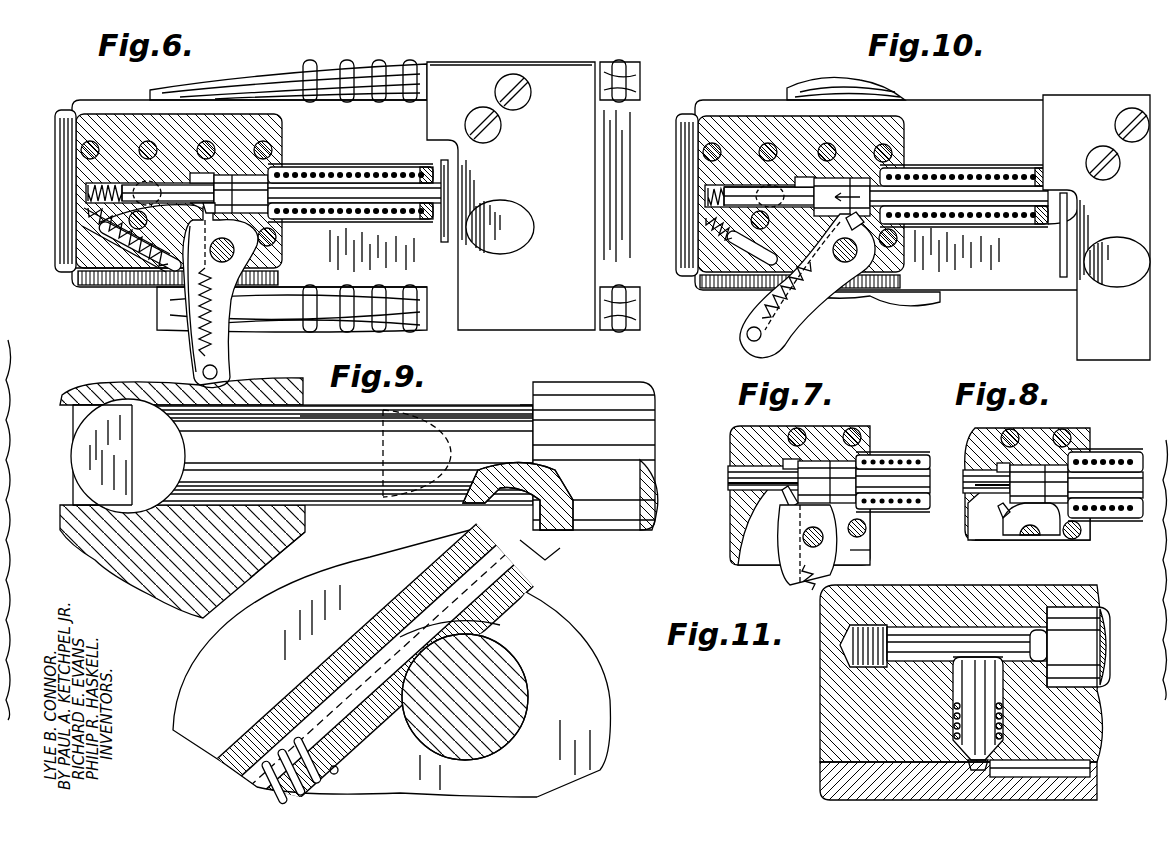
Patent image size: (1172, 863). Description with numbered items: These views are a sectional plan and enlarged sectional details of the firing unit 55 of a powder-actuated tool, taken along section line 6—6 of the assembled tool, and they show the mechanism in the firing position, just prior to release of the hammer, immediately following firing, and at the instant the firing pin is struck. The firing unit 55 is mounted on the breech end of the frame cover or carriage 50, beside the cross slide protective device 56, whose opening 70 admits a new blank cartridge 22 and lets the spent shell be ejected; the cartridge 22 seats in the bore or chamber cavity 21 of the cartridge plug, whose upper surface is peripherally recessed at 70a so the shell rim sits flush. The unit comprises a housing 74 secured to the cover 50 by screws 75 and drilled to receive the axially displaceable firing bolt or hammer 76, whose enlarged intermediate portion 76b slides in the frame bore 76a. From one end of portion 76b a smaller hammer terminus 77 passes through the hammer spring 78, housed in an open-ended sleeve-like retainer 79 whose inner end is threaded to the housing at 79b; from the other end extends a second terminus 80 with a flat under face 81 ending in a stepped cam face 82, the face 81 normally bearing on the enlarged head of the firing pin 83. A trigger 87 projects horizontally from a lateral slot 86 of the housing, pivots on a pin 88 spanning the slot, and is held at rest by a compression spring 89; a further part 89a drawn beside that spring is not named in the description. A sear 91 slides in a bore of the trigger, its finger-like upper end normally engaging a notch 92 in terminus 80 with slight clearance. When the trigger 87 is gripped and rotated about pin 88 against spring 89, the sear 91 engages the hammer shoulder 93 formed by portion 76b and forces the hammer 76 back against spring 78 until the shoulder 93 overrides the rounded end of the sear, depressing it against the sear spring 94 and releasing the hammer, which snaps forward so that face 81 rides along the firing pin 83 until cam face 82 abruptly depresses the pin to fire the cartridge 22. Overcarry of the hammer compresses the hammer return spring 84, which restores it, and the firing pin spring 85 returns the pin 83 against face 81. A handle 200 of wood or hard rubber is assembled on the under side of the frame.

In FIG. 6, the section line 6 is at (58, 124).
In FIG. 10, the section line 6 is at (684, 120).
In FIG. 11, the bore 21 is at (940, 770).
In FIG. 11, the blank cartridge 22 is at (1065, 770).
In FIG. 6, the cover 50 is at (150, 100).
In FIG. 10, the cover 50 is at (978, 108).
In FIG. 6, the firing unit 55 is at (95, 110).
In FIG. 10, the firing unit 55 is at (740, 110).
In FIG. 6, the cross slide protective device 56 is at (511, 196).
In FIG. 10, the cross slide protective device 56 is at (1082, 105).
In FIG. 6, the opening 70 is at (515, 210).
In FIG. 10, the opening 70 is at (1105, 285).
In FIG. 11, the peripheral recess 70a is at (968, 762).
In FIG. 6, the housing 74 is at (74, 266).
In FIG. 9, the housing 74 is at (225, 580).
In FIG. 7, the housing 74 is at (740, 500).
In FIG. 8, the housing 74 is at (968, 508).
In FIG. 11, the housing 74 is at (830, 680).
In FIG. 6, the screws 75 is at (80, 143).
In FIG. 10, the screws 75 is at (704, 140).
In FIG. 7, the screws 75 is at (790, 432).
In FIG. 8, the screws 75 is at (1002, 432).
In FIG. 6, the firing bolt or hammer 76 is at (312, 183).
In FIG. 10, the firing bolt or hammer 76 is at (959, 195).
In FIG. 9, the firing bolt or hammer 76 is at (304, 455).
In FIG. 7, the firing bolt or hammer 76 is at (893, 481).
In FIG. 8, the firing bolt or hammer 76 is at (1105, 485).
In FIG. 11, the firing bolt or hammer 76 is at (1078, 647).
In FIG. 6, the frame bore 76a is at (225, 175).
In FIG. 10, the frame bore 76a is at (835, 178).
In FIG. 7, the frame bore 76a is at (823, 461).
In FIG. 8, the frame bore 76a is at (1033, 465).
In FIG. 11, the frame bore 76a is at (1065, 607).
In FIG. 6, the intermediate portion 76b is at (238, 175).
In FIG. 10, the intermediate portion 76b is at (858, 178).
In FIG. 9, the intermediate portion 76b is at (570, 392).
In FIG. 7, the intermediate portion 76b is at (840, 461).
In FIG. 8, the intermediate portion 76b is at (1050, 465).
In FIG. 11, the intermediate portion 76b is at (1100, 615).
In FIG. 6, the hammer terminus 77 is at (358, 222).
In FIG. 10, the hammer terminus 77 is at (985, 224).
In FIG. 7, the hammer terminus 77 is at (902, 467).
In FIG. 8, the hammer terminus 77 is at (1108, 521).
In FIG. 6, the hammer spring 78 is at (340, 167).
In FIG. 10, the hammer spring 78 is at (915, 170).
In FIG. 7, the hammer spring 78 is at (905, 455).
In FIG. 8, the hammer spring 78 is at (1125, 452).
In FIG. 6, the retainer 79 is at (372, 167).
In FIG. 10, the retainer 79 is at (952, 170).
In FIG. 7, the threaded end 79b is at (875, 455).
In FIG. 8, the threaded end 79b is at (1100, 452).
In FIG. 6, the second hammer terminus 80 is at (167, 182).
In FIG. 10, the second hammer terminus 80 is at (730, 200).
In FIG. 9, the second hammer terminus 80 is at (460, 410).
In FIG. 7, the second hammer terminus 80 is at (745, 470).
In FIG. 8, the second hammer terminus 80 is at (970, 480).
In FIG. 11, the second hammer terminus 80 is at (935, 630).
In FIG. 11, the flat under face 81 is at (900, 660).
In FIG. 9, the stepped cam face 82 is at (408, 410).
In FIG. 11, the stepped cam face 82 is at (990, 660).
In FIG. 6, the firing pin 83 is at (140, 182).
In FIG. 10, the firing pin 83 is at (790, 185).
In FIG. 9, the firing pin 83 is at (112, 430).
In FIG. 11, the firing pin 83 is at (972, 660).
In FIG. 6, the hammer return spring 84 is at (88, 193).
In FIG. 10, the hammer return spring 84 is at (708, 193).
In FIG. 11, the hammer return spring 84 is at (845, 645).
In FIG. 11, the firing pin spring 85 is at (953, 712).
In FIG. 6, the slot 86 is at (125, 272).
In FIG. 10, the slot 86 is at (885, 262).
In FIG. 9, the slot 86 is at (275, 550).
In FIG. 7, the slot 86 is at (858, 552).
In FIG. 8, the slot 86 is at (985, 520).
In FIG. 6, the trigger 87 is at (190, 318).
In FIG. 10, the trigger 87 is at (775, 340).
In FIG. 9, the trigger 87 is at (545, 615).
In FIG. 7, the trigger 87 is at (790, 570).
In FIG. 8, the trigger 87 is at (1005, 530).
In FIG. 6, the pin 88 is at (235, 250).
In FIG. 10, the pin 88 is at (845, 262).
In FIG. 9, the pin 88 is at (500, 668).
In FIG. 7, the pin 88 is at (803, 537).
In FIG. 8, the pin 88 is at (1030, 538).
In FIG. 6, the compression spring 89 is at (75, 240).
In FIG. 10, the compression spring 89 is at (706, 228).
In FIG. 6, the spring rod 89a is at (160, 270).
In FIG. 10, the spring rod 89a is at (735, 248).
In FIG. 6, the sear 91 is at (217, 206).
In FIG. 10, the sear 91 is at (875, 232).
In FIG. 9, the sear 91 is at (530, 548).
In FIG. 7, the sear 91 is at (786, 500).
In FIG. 8, the sear 91 is at (1005, 520).
In FIG. 6, the notch 92 is at (205, 204).
In FIG. 10, the notch 92 is at (769, 195).
In FIG. 9, the notch 92 is at (540, 470).
In FIG. 7, the notch 92 is at (740, 486).
In FIG. 8, the notch 92 is at (985, 470).
In FIG. 11, the notch 92 is at (1035, 630).
In FIG. 6, the hammer shoulder 93 is at (198, 173).
In FIG. 10, the hammer shoulder 93 is at (812, 177).
In FIG. 9, the hammer shoulder 93 is at (530, 395).
In FIG. 7, the hammer shoulder 93 is at (783, 465).
In FIG. 8, the hammer shoulder 93 is at (997, 466).
In FIG. 6, the sear spring 94 is at (198, 342).
In FIG. 10, the sear spring 94 is at (812, 310).
In FIG. 9, the sear spring 94 is at (270, 745).
In FIG. 7, the sear spring 94 is at (805, 590).
In FIG. 6, the handle 200 is at (272, 78).
In FIG. 10, the handle 200 is at (812, 82).